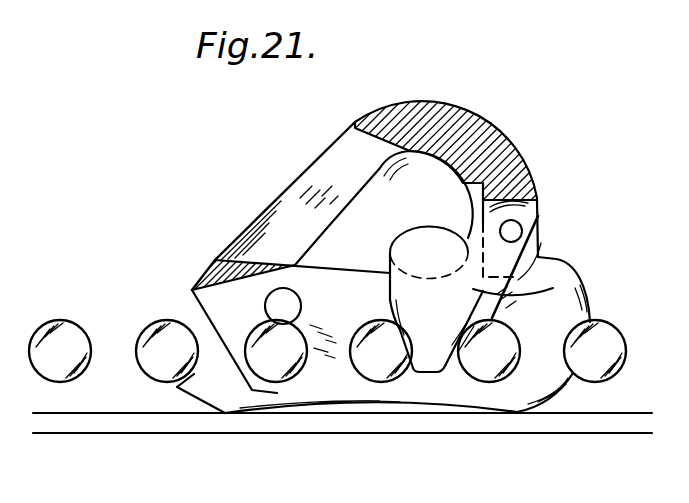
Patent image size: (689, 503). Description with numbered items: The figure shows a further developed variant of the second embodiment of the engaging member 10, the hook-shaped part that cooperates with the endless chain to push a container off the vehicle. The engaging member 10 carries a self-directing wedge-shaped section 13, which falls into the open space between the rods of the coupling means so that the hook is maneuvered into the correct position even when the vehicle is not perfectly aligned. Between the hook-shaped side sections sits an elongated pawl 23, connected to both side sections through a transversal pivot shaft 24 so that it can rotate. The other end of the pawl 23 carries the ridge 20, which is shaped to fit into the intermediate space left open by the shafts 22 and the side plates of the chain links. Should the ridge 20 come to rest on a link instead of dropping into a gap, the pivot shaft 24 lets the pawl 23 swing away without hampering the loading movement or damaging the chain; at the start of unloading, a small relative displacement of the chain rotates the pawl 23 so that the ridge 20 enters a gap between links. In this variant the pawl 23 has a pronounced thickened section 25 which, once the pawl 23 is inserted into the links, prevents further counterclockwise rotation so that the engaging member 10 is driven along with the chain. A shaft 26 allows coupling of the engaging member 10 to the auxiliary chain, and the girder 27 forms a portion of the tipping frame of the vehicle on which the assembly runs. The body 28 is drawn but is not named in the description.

The engaging member 10 is at (501, 124).
The wedge-shaped section 13 is at (288, 190).
The ridge 20 is at (432, 365).
The shafts 22 is at (142, 330).
The pawl 23 is at (555, 274).
The pivot shaft 24 is at (513, 232).
The thickened section 25 is at (421, 254).
The shaft 26 is at (265, 300).
The girder 27 is at (510, 423).
The carriage body 28 is at (324, 390).